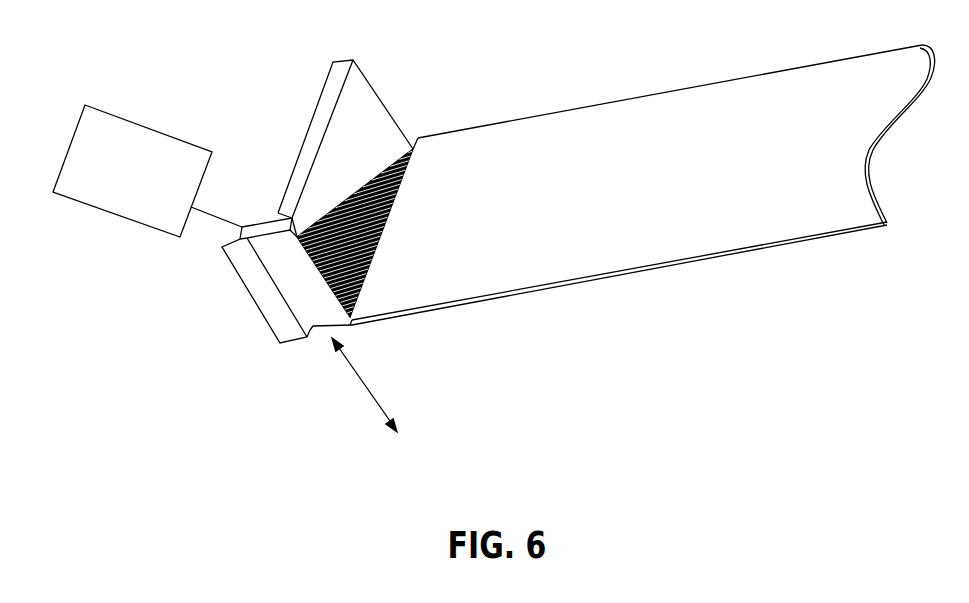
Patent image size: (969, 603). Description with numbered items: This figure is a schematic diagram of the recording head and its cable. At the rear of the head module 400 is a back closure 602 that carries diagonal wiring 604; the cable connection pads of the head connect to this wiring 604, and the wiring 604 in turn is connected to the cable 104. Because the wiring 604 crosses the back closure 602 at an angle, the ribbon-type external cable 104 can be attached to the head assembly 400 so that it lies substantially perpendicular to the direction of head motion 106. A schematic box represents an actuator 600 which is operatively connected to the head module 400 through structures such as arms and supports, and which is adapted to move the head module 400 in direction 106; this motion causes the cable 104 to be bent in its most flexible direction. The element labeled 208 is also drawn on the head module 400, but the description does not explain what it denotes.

The actuator 600 is at (117, 191).
The back closure 602 is at (361, 116).
The wiring 604 is at (340, 185).
The cable 104 is at (582, 167).
The head module 400 is at (295, 275).
The head 208 is at (300, 253).
The direction of head motion 106 is at (510, 385).